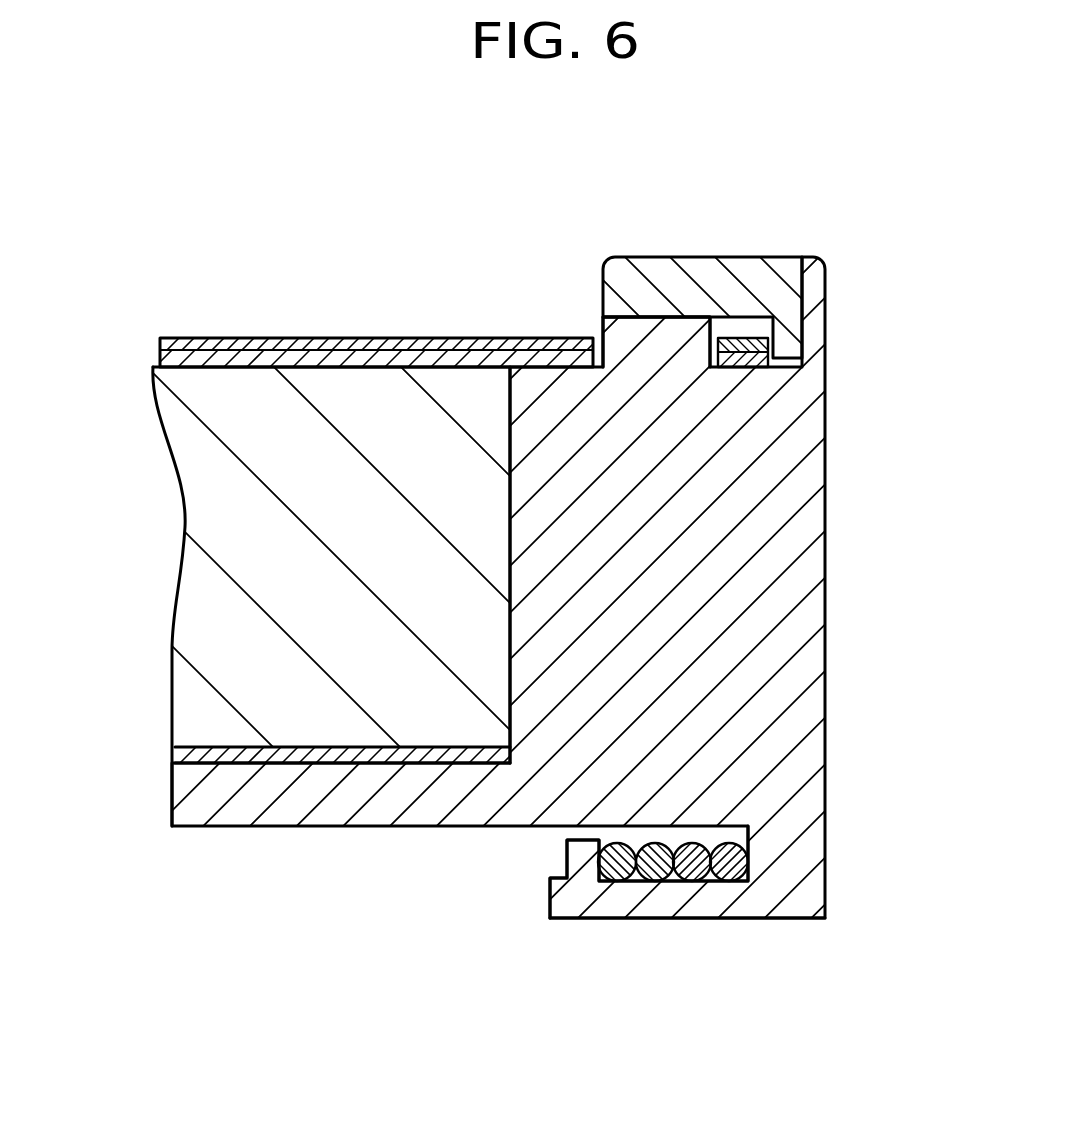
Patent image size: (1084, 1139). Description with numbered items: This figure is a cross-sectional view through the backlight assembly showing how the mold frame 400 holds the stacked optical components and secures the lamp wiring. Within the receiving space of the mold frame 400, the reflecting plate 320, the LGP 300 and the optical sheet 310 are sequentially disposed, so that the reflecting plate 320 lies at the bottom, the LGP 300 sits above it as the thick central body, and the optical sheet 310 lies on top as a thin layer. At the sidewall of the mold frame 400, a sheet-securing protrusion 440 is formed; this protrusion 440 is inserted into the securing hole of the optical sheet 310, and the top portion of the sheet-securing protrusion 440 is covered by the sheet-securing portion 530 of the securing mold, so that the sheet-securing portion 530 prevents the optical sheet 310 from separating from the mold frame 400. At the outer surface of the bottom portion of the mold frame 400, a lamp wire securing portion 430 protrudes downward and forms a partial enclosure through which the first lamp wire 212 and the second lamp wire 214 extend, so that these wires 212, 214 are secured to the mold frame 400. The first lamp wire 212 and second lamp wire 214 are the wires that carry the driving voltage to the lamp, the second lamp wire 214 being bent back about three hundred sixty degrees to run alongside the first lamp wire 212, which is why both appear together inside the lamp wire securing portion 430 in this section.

The mold frame 400 is at (800, 525).
The sheet-securing portion 530 is at (708, 276).
The sheet-securing protrusion 440 is at (627, 335).
The LGP 300 is at (200, 560).
The optical sheet 310 is at (165, 345).
The reflecting plate 320 is at (178, 755).
The lamp wire securing portion 430 is at (667, 902).
The first lamp wire 212 is at (623, 877).
The second lamp wire 214 is at (738, 877).